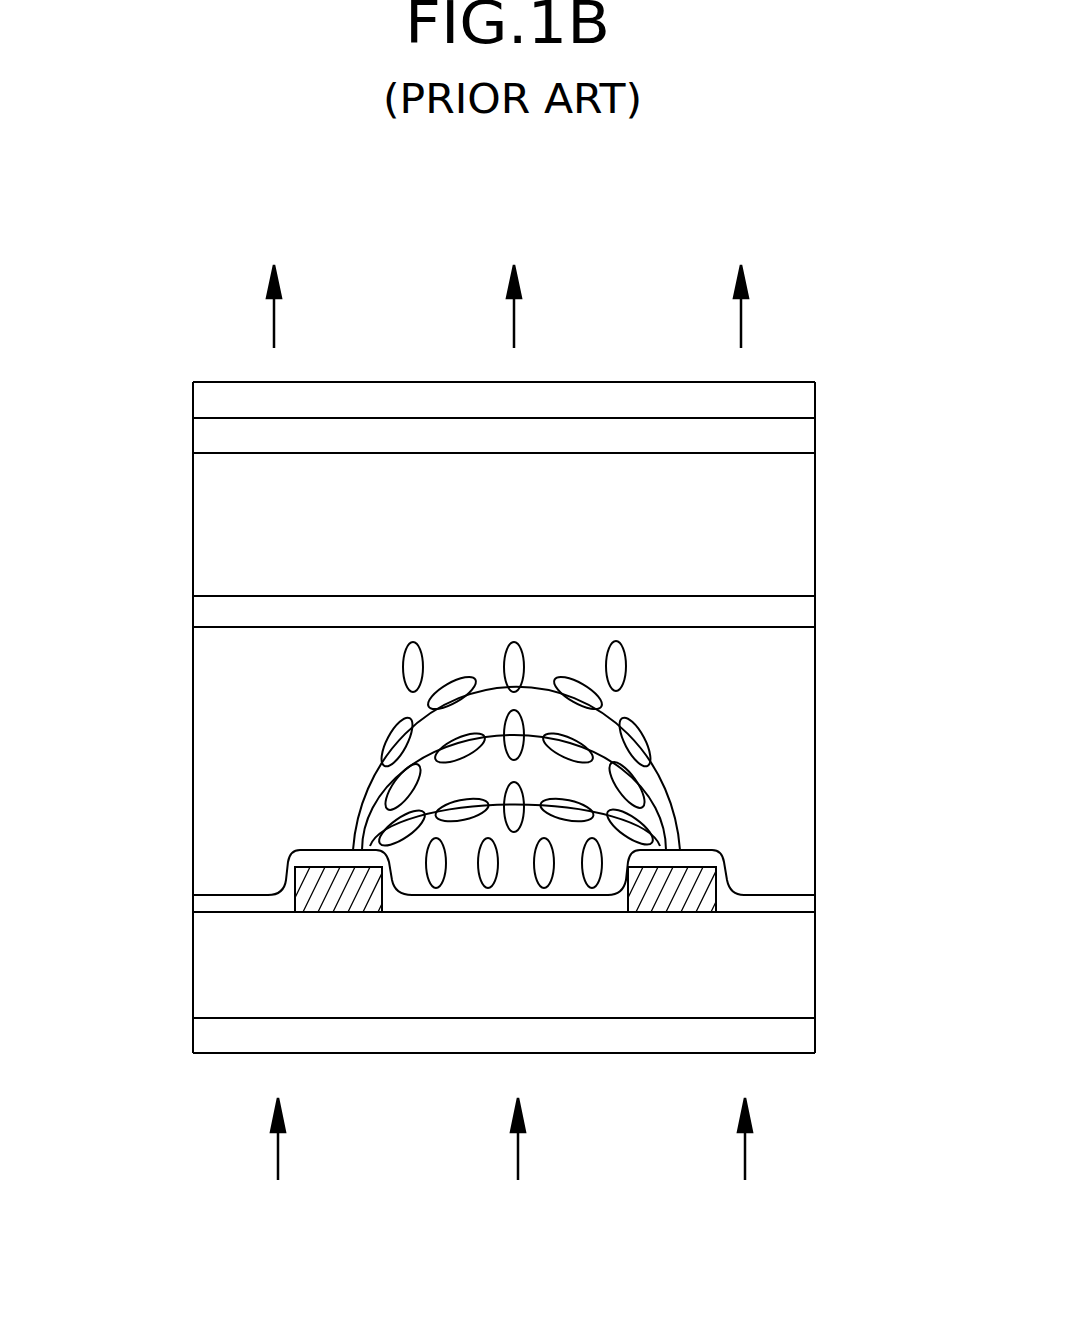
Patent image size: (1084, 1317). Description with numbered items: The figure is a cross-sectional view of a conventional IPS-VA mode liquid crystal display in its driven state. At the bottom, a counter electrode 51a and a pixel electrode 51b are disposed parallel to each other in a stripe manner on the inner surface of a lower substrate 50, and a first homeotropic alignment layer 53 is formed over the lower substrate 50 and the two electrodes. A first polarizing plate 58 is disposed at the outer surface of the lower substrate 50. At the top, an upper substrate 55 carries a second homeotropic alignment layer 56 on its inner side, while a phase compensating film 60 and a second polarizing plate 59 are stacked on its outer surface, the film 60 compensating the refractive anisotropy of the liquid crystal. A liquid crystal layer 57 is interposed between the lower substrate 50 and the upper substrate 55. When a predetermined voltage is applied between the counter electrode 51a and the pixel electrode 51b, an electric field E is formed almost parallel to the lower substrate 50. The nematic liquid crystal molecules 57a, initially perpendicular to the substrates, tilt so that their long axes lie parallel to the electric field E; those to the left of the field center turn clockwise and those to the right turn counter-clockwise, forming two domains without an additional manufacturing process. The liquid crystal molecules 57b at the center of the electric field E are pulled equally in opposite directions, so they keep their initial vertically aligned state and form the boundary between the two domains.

The second polarizing plate 59 is at (803, 398).
The phase compensating film 60 is at (803, 436).
The upper substrate 55 is at (803, 530).
The second homeotropic alignment layer 56 is at (803, 610).
The liquid crystal layer 57 is at (805, 810).
The liquid crystal molecules 57a is at (637, 732).
The liquid crystal molecules in the center of the electric field 57b is at (408, 668).
The electric field E is at (362, 800).
The first homeotropic alignment layer 53 is at (803, 905).
The counter electrode 51a is at (342, 890).
The pixel electrode 51b is at (677, 888).
The lower substrate 50 is at (803, 963).
The first polarizing plate 58 is at (803, 1037).